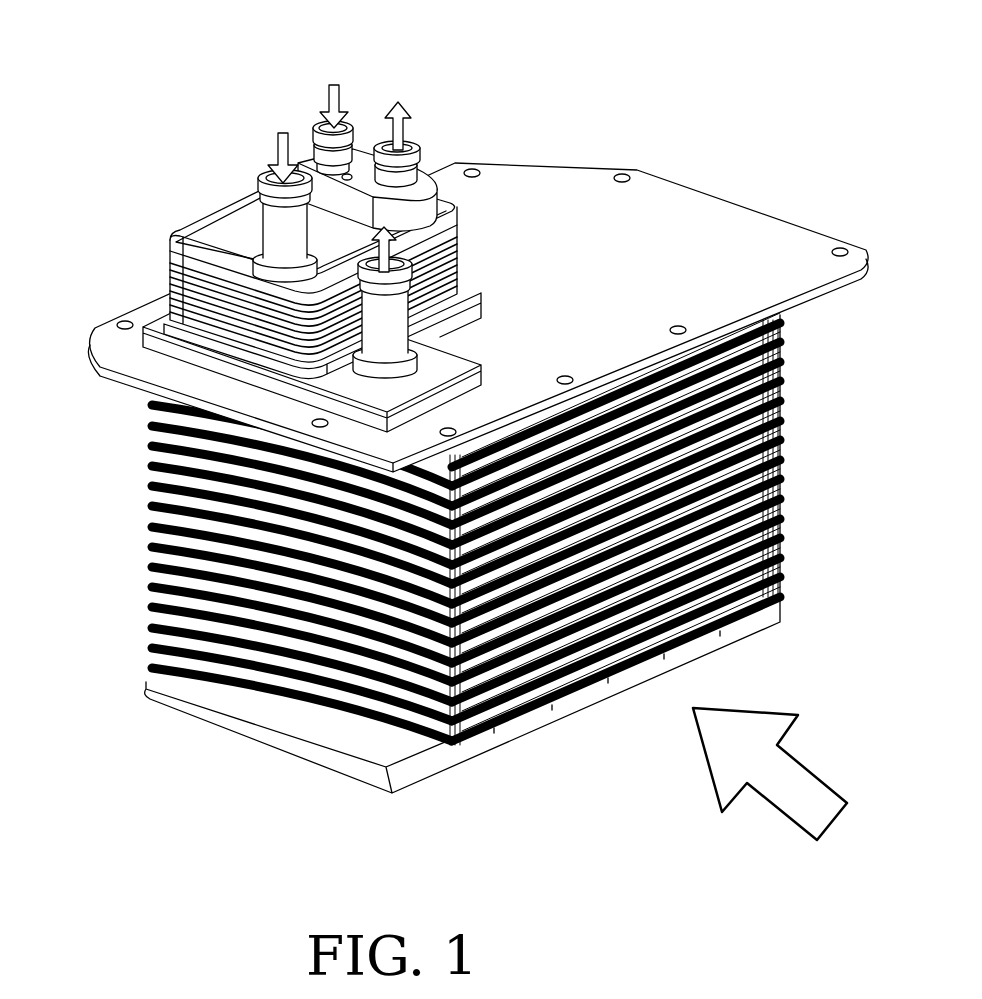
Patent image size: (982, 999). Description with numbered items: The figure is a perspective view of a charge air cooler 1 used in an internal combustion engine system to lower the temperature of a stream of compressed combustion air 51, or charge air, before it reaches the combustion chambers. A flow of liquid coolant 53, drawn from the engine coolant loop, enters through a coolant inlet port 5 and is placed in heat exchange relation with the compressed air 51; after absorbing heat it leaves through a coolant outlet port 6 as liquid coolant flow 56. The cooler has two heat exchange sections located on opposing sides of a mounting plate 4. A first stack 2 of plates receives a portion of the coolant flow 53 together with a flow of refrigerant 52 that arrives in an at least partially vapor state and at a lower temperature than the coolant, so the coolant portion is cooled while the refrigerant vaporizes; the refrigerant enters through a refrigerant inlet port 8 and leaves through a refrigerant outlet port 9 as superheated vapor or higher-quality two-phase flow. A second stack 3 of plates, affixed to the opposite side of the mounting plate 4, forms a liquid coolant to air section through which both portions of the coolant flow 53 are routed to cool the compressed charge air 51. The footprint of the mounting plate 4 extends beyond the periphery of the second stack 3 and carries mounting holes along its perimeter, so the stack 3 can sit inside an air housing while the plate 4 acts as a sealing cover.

The charge air cooler 1 is at (744, 88).
The stack of plates 2 is at (284, 271).
The second stack of plates 3 is at (797, 437).
The mounting plate 4 is at (762, 200).
The coolant inlet port 5 is at (274, 222).
The coolant outlet port 6 is at (394, 320).
The refrigerant inlet port 8 is at (346, 143).
The refrigerant outlet port 9 is at (414, 174).
The compressed combustion air 51 is at (750, 740).
The flow of refrigerant 52 is at (327, 110).
The flow of liquid coolant 53 is at (284, 150).
The liquid coolant flow 56 is at (392, 261).